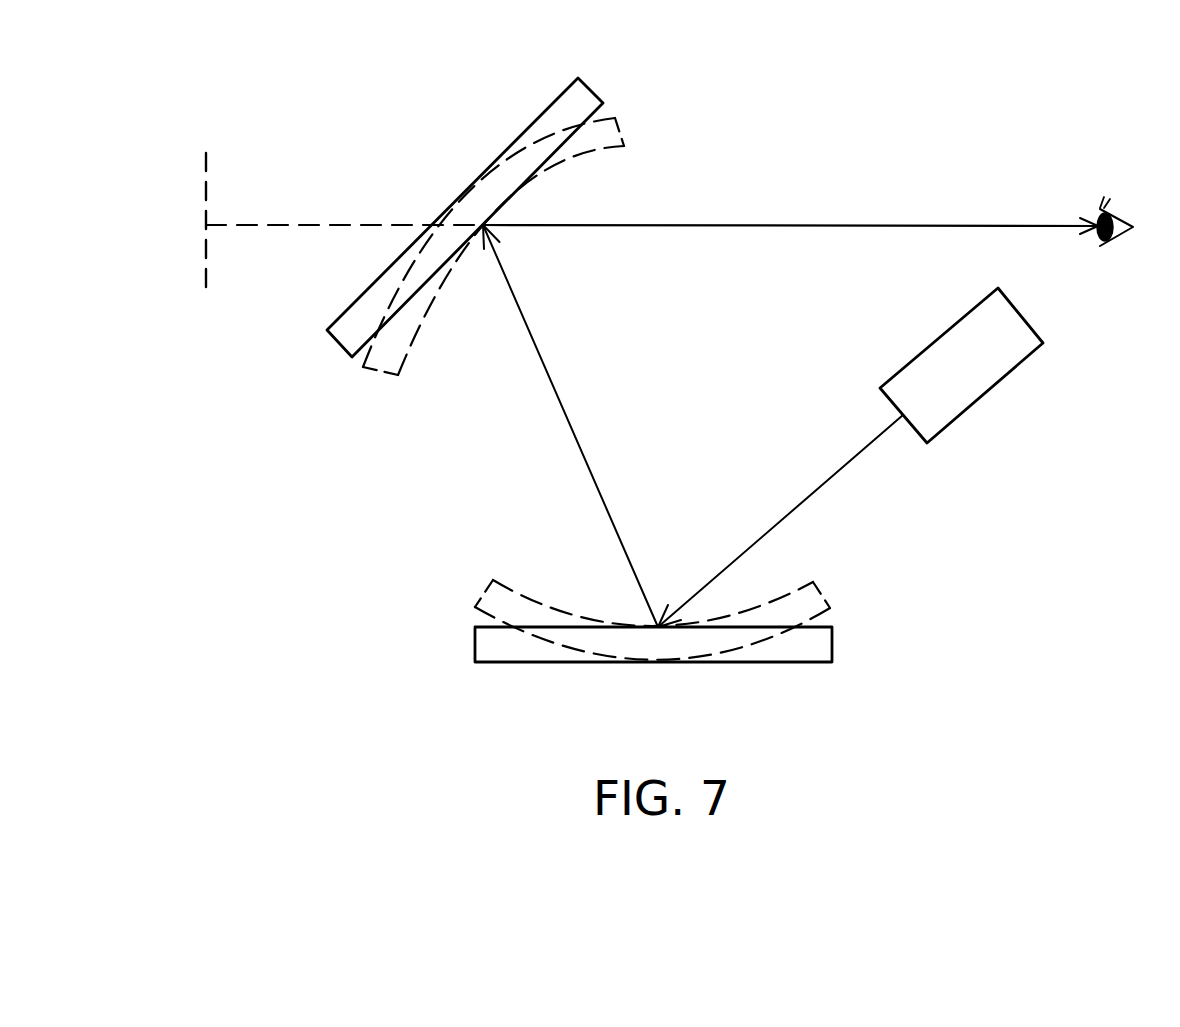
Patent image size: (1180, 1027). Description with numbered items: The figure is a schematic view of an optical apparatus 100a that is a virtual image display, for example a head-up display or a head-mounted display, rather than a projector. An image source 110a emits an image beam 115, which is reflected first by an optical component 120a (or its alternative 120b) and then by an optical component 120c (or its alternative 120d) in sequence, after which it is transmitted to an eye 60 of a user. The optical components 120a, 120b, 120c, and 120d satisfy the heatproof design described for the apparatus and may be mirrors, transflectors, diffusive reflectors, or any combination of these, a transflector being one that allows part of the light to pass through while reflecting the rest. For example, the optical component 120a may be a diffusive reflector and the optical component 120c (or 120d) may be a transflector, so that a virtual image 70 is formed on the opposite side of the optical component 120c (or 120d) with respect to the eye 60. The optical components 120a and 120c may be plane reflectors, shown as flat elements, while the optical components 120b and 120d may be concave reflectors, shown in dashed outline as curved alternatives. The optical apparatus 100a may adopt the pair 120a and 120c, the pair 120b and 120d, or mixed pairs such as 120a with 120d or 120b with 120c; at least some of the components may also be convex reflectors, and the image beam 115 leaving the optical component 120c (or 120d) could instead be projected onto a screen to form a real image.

The eye 60 is at (1121, 220).
The virtual image 70 is at (202, 190).
The optical apparatus 100a is at (1145, 720).
The image source 110a is at (987, 393).
The image beam 115 is at (786, 517).
The optical component 120a is at (833, 643).
The optical component 120b is at (830, 598).
The optical component 120c is at (593, 88).
The optical component 120d is at (622, 141).